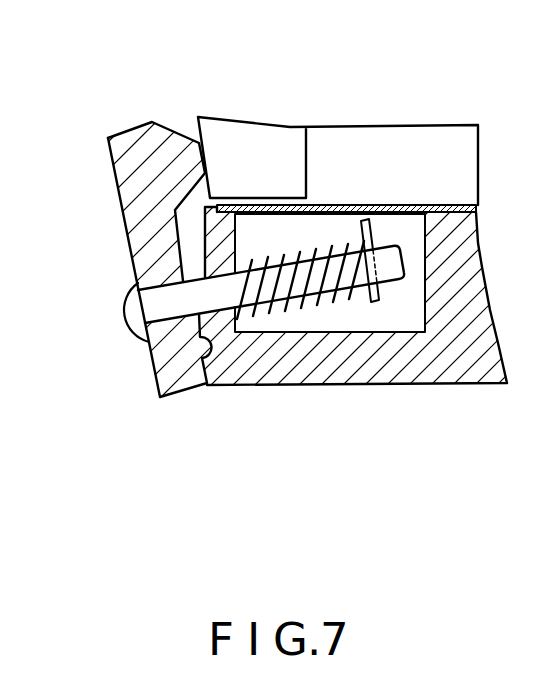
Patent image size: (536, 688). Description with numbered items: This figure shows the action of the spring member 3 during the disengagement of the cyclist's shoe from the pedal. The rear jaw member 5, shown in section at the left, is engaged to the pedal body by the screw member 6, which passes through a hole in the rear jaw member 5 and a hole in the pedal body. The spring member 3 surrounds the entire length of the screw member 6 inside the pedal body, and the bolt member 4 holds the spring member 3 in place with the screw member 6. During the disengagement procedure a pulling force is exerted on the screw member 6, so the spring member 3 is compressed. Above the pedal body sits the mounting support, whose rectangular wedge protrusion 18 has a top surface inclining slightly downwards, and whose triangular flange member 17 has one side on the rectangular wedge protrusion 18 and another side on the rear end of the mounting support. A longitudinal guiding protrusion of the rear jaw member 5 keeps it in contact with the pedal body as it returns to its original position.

The spring member 3 is at (293, 313).
The bolt member 4 is at (371, 226).
The rear jaw member 5 is at (157, 178).
The screw member 6 is at (160, 300).
The triangular flange member 17 is at (278, 203).
The rectangular wedge protrusion 18 is at (223, 143).